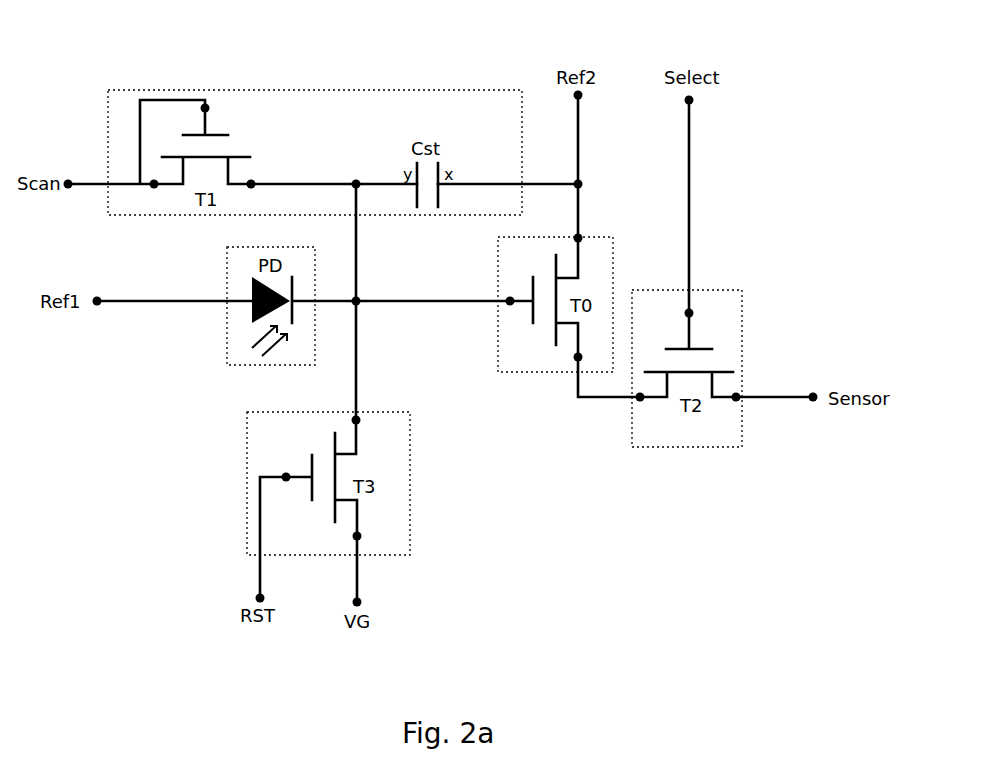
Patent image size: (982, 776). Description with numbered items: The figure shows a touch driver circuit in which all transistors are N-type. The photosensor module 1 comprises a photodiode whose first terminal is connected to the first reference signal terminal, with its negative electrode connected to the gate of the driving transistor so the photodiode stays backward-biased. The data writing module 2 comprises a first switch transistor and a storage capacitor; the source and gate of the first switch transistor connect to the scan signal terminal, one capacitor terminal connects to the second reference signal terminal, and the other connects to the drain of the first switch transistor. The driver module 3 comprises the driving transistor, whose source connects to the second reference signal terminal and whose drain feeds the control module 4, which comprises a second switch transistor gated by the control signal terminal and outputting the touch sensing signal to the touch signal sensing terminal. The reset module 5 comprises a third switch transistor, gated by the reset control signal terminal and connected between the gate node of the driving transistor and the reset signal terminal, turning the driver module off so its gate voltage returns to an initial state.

The photosensor module 1 is at (227, 337).
The data writing module 2 is at (263, 90).
The driver module 3 is at (523, 372).
The control module 4 is at (718, 290).
The reset module 5 is at (176, 498).